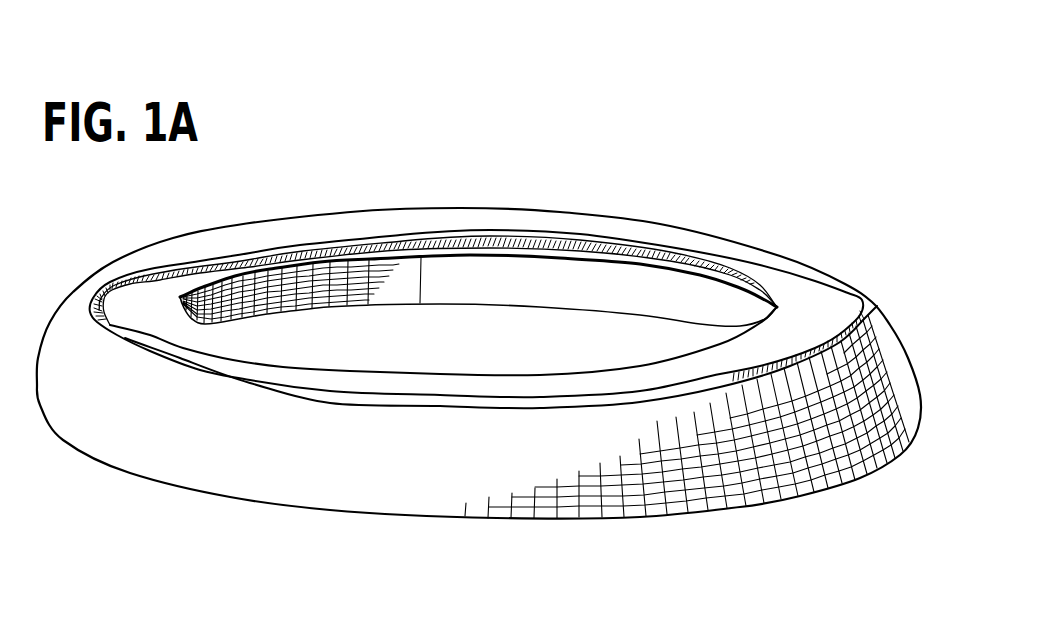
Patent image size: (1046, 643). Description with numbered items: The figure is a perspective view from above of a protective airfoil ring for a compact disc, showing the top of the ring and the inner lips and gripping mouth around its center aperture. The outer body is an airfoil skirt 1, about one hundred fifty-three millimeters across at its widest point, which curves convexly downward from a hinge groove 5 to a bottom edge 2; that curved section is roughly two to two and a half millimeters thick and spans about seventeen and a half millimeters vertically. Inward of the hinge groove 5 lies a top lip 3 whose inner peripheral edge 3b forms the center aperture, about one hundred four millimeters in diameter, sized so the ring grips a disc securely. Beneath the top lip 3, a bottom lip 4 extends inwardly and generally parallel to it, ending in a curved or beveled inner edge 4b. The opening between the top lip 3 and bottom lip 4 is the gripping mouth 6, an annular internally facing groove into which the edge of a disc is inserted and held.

The airfoil skirt 1 is at (257, 430).
The bottom edge 2 is at (393, 280).
The top lip 3 is at (471, 220).
The inner peripheral edge of the top lip 3b is at (523, 240).
The bottom lip 4 is at (578, 250).
The inner edge of the bottom lip 4b is at (623, 267).
The hinge groove 5 is at (153, 348).
The gripping mouth 6 is at (645, 261).